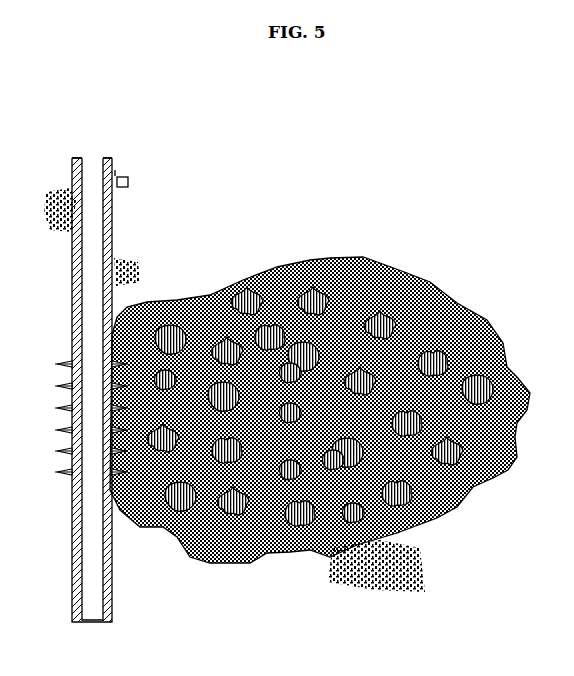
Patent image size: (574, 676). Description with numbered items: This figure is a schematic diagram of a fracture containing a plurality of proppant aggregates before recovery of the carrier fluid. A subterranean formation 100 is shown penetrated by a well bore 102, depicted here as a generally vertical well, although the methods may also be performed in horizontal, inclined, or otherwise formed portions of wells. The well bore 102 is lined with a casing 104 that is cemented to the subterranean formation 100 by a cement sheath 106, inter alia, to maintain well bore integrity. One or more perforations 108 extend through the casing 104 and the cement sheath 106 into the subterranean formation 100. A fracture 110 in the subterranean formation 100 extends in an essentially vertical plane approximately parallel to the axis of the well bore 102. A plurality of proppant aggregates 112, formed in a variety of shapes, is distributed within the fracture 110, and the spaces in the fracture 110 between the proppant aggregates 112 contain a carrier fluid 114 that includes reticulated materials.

The subterranean formation 100 is at (320, 391).
The well bore 102 is at (113, 236).
The casing 104 is at (96, 157).
The cement sheath 106 is at (112, 592).
The perforations 108 is at (110, 490).
The fracture 110 is at (457, 303).
The plurality of proppant aggregates 112 is at (430, 282).
The carrier fluid 114 is at (378, 263).